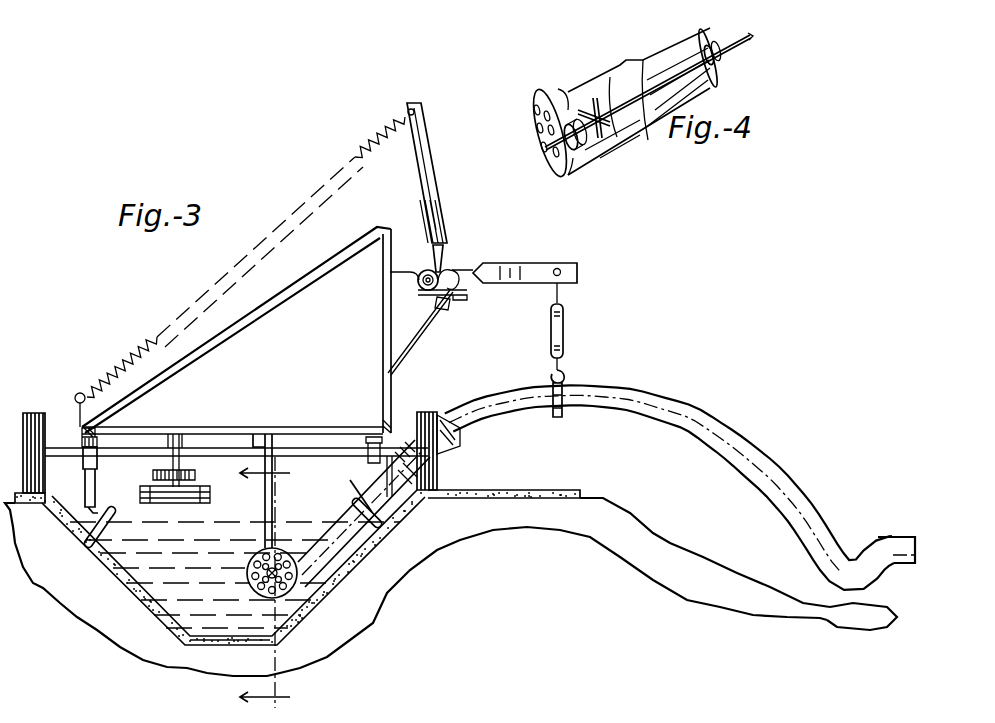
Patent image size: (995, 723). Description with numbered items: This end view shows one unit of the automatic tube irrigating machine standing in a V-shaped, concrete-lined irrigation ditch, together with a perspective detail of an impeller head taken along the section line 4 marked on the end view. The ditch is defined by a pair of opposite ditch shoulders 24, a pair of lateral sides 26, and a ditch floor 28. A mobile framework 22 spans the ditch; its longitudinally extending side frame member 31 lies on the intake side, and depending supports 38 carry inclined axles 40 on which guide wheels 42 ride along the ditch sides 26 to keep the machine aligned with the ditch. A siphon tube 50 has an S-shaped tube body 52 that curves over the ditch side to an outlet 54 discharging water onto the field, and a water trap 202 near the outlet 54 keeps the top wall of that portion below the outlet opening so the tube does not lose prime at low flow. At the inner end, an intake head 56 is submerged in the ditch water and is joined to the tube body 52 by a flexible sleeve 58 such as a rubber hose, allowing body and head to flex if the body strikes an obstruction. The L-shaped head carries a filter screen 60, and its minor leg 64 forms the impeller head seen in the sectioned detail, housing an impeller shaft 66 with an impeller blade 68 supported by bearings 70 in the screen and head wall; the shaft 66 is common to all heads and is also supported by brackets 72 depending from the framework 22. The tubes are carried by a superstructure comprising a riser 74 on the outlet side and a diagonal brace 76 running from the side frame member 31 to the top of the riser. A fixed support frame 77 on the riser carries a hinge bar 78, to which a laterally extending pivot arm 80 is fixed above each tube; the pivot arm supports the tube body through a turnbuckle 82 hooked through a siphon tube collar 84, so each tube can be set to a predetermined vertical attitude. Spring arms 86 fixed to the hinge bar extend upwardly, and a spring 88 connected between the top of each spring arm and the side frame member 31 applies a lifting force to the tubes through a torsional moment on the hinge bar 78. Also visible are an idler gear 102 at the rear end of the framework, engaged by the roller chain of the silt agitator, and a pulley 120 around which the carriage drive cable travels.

In FIG. 3, the mobile framework 22 is at (264, 427).
In FIG. 3, the ditch shoulders 24 is at (35, 500).
In FIG. 3, the lateral sides 26 is at (148, 592).
In FIG. 3, the ditch floor 28 is at (216, 640).
In FIG. 3, the side frame member 31 is at (80, 428).
In FIG. 3, the depending supports 38 is at (83, 470).
In FIG. 3, the inclined axles 40 is at (376, 518).
In FIG. 3, the guide wheels 42 is at (87, 533).
In FIG. 3, the siphon tubes 50 is at (680, 476).
In FIG. 3, the tube body 52 is at (741, 440).
In FIG. 3, the outlet 54 is at (908, 536).
In FIG. 3, the intake head 56 is at (324, 520).
In FIG. 3, the flexible sleeve 58 is at (395, 423).
In FIG. 4, the filter screen 60 is at (535, 110).
In FIG. 4, the minor leg 64 is at (630, 60).
In FIG. 4, the impeller shaft 66 is at (746, 37).
In FIG. 4, the impeller blade 68 is at (608, 134).
In FIG. 4, the bearings 70 is at (582, 153).
In FIG. 3, the brackets 72 is at (262, 543).
In FIG. 3, the riser 74 is at (384, 345).
In FIG. 3, the diagonal brace 76 is at (252, 318).
In FIG. 3, the fixed support frame 77 is at (415, 333).
In FIG. 3, the hinge bar 78 is at (425, 272).
In FIG. 3, the pivot arm 80 is at (535, 268).
In FIG. 3, the turnbuckle 82 is at (564, 320).
In FIG. 3, the siphon tube collar 84 is at (556, 419).
In FIG. 3, the spring arms 86 is at (428, 172).
In FIG. 3, the spring 88 is at (366, 150).
In FIG. 3, the idler gear 102 is at (158, 470).
In FIG. 3, the pulley 120 is at (199, 493).
In FIG. 3, the water trap 202 is at (837, 601).
In FIG. 3, the section line 4- 4 is at (272, 583).